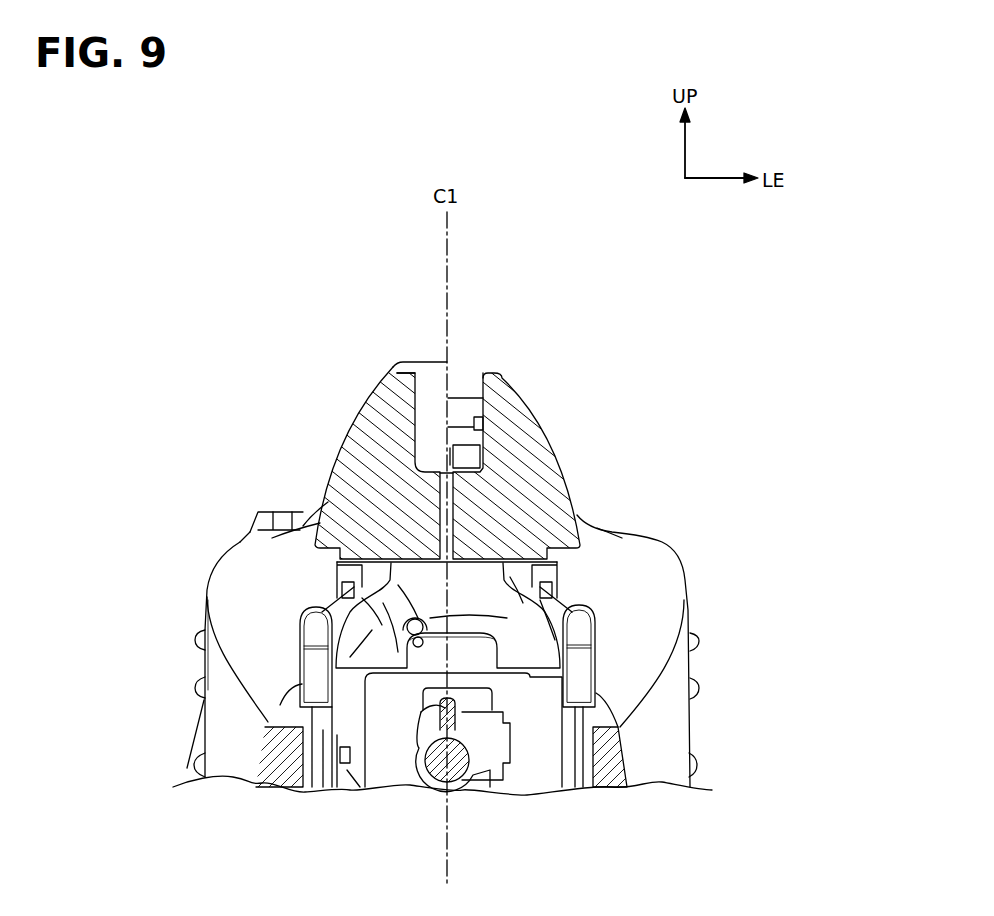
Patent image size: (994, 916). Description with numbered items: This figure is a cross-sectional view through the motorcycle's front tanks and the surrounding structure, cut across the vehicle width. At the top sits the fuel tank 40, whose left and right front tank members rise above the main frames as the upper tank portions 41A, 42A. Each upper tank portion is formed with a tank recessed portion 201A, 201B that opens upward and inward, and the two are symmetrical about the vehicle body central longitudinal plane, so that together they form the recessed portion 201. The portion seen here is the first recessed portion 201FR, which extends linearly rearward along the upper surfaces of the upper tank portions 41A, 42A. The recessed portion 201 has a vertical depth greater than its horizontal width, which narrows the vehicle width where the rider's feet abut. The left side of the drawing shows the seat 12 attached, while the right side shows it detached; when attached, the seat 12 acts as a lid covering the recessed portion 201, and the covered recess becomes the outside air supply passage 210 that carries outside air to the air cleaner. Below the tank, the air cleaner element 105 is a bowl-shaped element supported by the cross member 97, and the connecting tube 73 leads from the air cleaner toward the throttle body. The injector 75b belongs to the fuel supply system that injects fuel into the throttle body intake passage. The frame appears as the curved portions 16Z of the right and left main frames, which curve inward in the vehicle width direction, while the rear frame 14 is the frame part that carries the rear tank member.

The rear frame 14 is at (699, 711).
The fuel tank 40 is at (372, 399).
The upper tank portion 42A is at (363, 420).
The upper tank portion 41A is at (535, 418).
The seat 12 is at (423, 357).
The recessed portion 201 is at (573, 250).
The tank recessed portion 201B is at (467, 390).
The tank recessed portion 201A is at (487, 361).
The outside air supply passage 210 is at (492, 356).
The first recessed portion 201FR is at (470, 409).
The air cleaner element 105 is at (532, 580).
The cross member 97 is at (572, 602).
The injector 75b is at (405, 642).
The connecting tube 73 is at (458, 772).
The curved portion 16Z is at (266, 740).